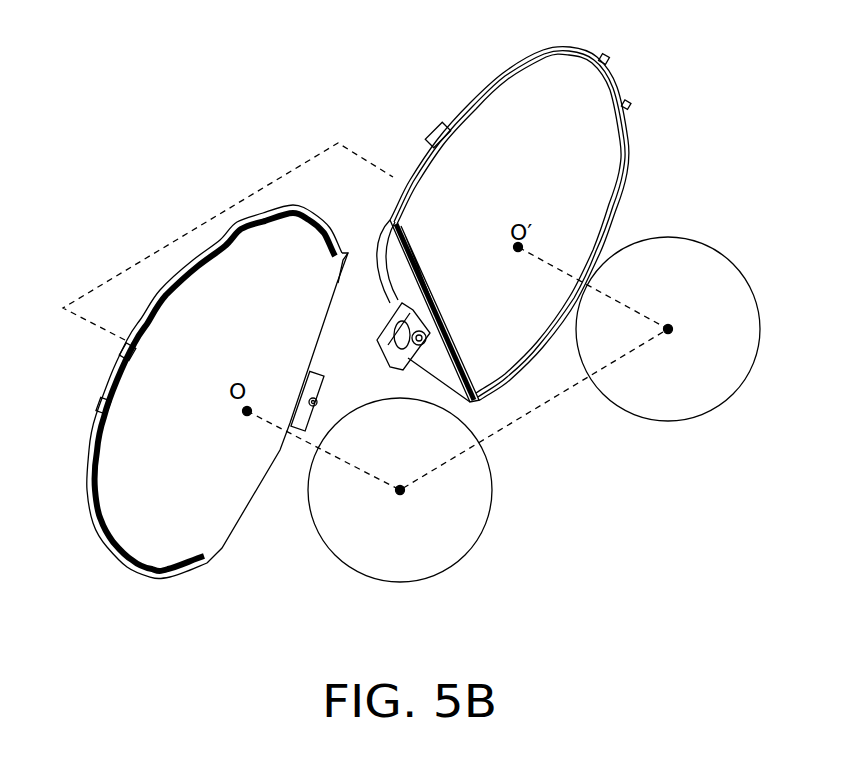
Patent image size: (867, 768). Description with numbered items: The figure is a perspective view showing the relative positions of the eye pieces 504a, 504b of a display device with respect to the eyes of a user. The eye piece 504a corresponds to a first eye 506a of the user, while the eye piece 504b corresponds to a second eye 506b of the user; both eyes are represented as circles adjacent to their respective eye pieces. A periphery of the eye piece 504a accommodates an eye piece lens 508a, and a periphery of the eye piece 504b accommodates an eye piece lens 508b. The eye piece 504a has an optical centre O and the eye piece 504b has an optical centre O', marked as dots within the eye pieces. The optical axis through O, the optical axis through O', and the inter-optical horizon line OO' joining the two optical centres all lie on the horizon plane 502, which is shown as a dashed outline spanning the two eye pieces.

The horizon plane 502 is at (312, 177).
The eye piece 504a is at (100, 432).
The eye piece 504b is at (610, 84).
The first eye 506a is at (330, 553).
The second eye 506b is at (618, 407).
The eye piece lens 508a is at (134, 553).
The eye piece lens 508b is at (613, 158).